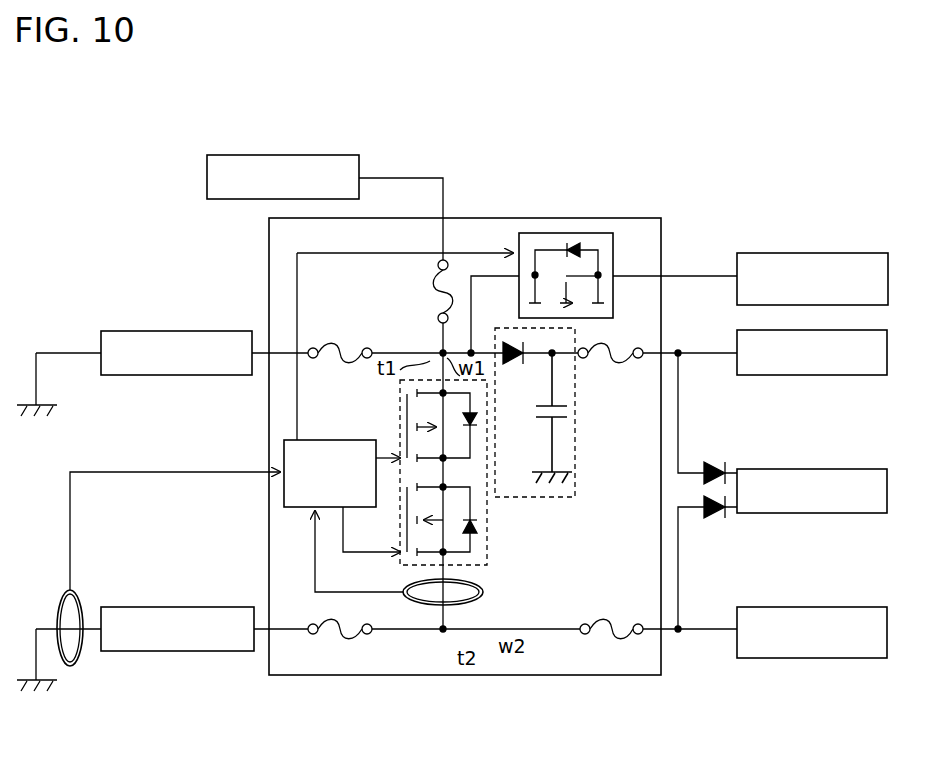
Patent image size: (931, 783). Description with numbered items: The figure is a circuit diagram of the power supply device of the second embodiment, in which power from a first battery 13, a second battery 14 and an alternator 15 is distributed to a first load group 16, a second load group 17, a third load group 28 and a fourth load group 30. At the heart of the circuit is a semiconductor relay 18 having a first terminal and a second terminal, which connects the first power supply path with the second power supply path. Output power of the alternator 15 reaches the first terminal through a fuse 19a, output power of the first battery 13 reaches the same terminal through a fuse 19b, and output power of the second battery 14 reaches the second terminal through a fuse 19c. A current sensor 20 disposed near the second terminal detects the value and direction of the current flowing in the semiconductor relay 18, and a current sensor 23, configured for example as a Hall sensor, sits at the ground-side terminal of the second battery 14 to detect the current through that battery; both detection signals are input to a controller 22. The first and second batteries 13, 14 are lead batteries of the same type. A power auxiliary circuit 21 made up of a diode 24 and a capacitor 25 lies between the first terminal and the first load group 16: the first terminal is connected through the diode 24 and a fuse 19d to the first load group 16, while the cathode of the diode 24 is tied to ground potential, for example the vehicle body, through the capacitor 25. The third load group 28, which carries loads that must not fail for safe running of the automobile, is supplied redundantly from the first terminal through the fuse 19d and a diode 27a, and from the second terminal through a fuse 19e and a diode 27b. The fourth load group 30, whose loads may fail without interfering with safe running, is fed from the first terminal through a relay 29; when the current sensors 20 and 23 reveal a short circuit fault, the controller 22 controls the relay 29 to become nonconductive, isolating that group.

The first battery 13 is at (186, 331).
The second battery 14 is at (186, 607).
The alternator 15 is at (292, 156).
The first load group 16 is at (825, 330).
The second load group 17 is at (825, 607).
The semiconductor relay 18 is at (488, 521).
The fuse 19a is at (436, 288).
The fuse 19b is at (339, 340).
The fuse 19c is at (340, 636).
The fuse 19d is at (610, 360).
The fuse 19e is at (612, 636).
The current sensor 20 is at (484, 592).
The power auxiliary circuit 21 is at (561, 412).
The controller 22 is at (320, 440).
The current sensor 23 is at (84, 590).
The diode 24 is at (516, 366).
The capacitor 25 is at (562, 418).
The diode 27a is at (716, 460).
The diode 27b is at (716, 520).
The third load group 28 is at (825, 469).
The relay 29 is at (614, 262).
The fourth load group 30 is at (825, 253).